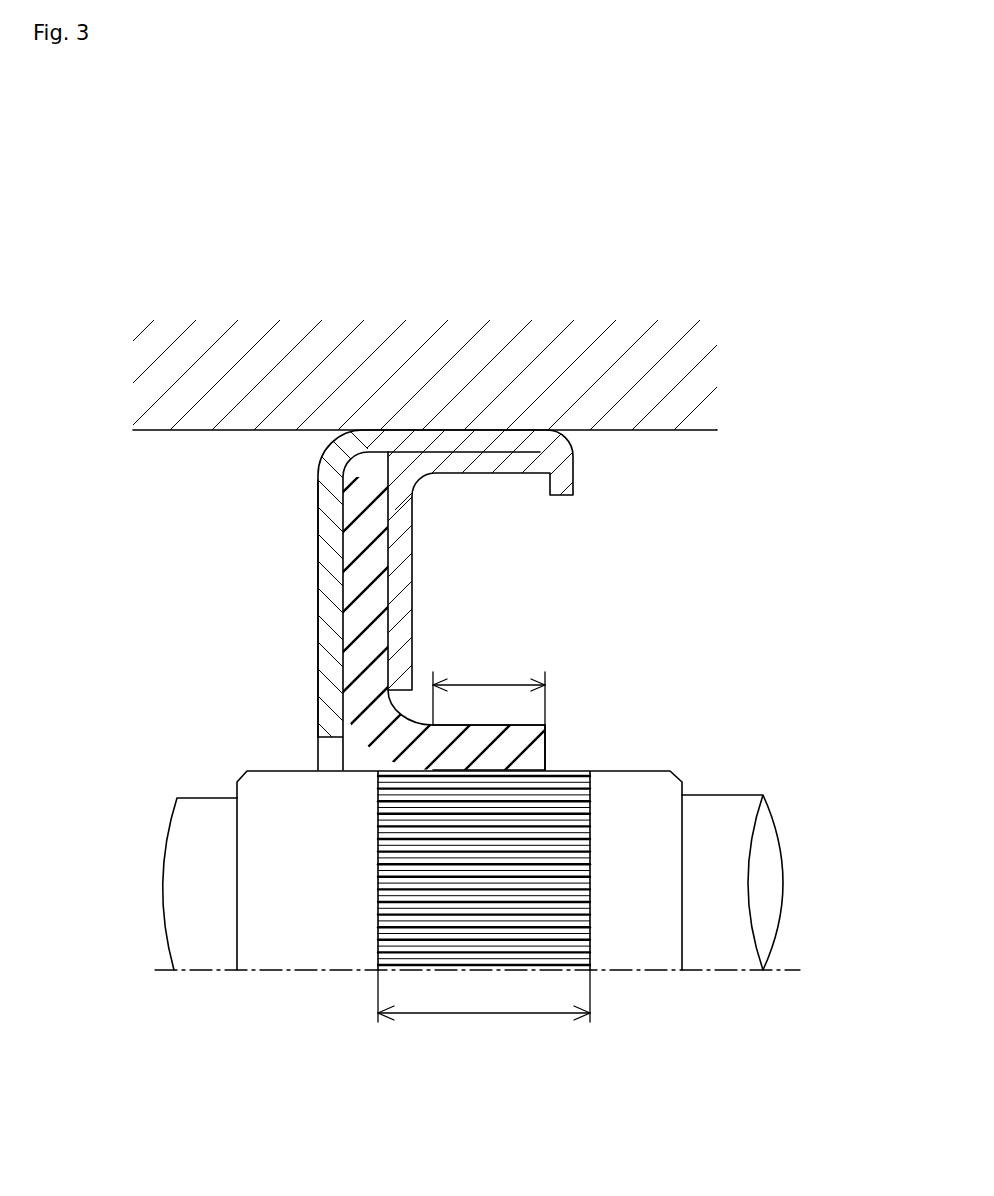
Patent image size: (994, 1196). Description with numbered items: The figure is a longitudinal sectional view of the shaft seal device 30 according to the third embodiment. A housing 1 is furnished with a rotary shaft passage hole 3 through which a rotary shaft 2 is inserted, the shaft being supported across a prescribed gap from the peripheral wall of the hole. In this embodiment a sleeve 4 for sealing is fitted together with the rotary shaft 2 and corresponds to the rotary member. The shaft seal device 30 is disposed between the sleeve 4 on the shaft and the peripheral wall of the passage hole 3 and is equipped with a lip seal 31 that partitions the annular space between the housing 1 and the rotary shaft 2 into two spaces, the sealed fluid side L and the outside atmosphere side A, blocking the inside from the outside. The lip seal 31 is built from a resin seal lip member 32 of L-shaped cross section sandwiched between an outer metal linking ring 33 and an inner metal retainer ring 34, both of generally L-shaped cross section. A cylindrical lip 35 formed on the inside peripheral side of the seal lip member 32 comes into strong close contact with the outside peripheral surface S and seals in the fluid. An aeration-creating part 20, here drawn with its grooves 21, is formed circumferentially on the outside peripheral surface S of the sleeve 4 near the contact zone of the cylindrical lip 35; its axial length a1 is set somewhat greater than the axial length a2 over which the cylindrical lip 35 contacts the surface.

The housing 1 is at (432, 345).
The rotary shaft 2 is at (187, 893).
The rotary shaft passage hole 3 is at (655, 429).
The sleeve 4 is at (307, 827).
The aeration-creating part 20 is at (590, 878).
The grooves of knurled portion 21 is at (386, 897).
The shaft seal device 30 is at (200, 728).
The lip seal 31 is at (292, 665).
The resin seal lip member 32 is at (343, 603).
The outer metal linking ring 33 is at (327, 533).
The inner metal retainer ring 34 is at (395, 587).
The cylindrical lip 35 is at (505, 745).
The outside atmosphere side A is at (62, 662).
The sealed fluid side L is at (805, 662).
The outside peripheral surface S is at (658, 792).
The length of the aeration-creating part a1 is at (484, 996).
The length along which the cylindrical lip contacts a2 is at (489, 684).